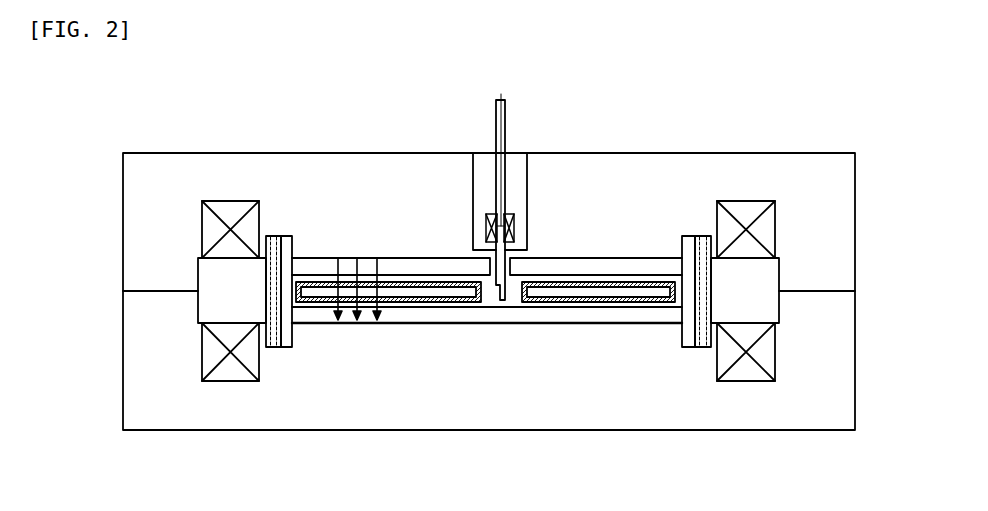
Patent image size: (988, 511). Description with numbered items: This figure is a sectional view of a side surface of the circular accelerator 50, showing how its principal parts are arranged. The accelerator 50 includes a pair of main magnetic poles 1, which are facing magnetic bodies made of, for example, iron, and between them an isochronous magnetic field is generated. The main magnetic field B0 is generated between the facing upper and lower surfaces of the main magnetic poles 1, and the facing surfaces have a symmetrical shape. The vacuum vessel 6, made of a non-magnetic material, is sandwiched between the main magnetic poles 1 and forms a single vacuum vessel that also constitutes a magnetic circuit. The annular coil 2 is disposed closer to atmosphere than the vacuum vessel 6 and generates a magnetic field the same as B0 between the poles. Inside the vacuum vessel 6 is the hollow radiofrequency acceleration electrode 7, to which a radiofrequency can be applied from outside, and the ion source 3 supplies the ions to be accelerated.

The main magnetic poles 1 is at (363, 185).
The annular coil 2 is at (228, 218).
The ion source 3 is at (497, 302).
The vacuum vessel 6 is at (703, 347).
The radiofrequency acceleration electrode 7 is at (650, 302).
The accelerator 50 is at (803, 117).
The main magnetic field B0 is at (357, 273).